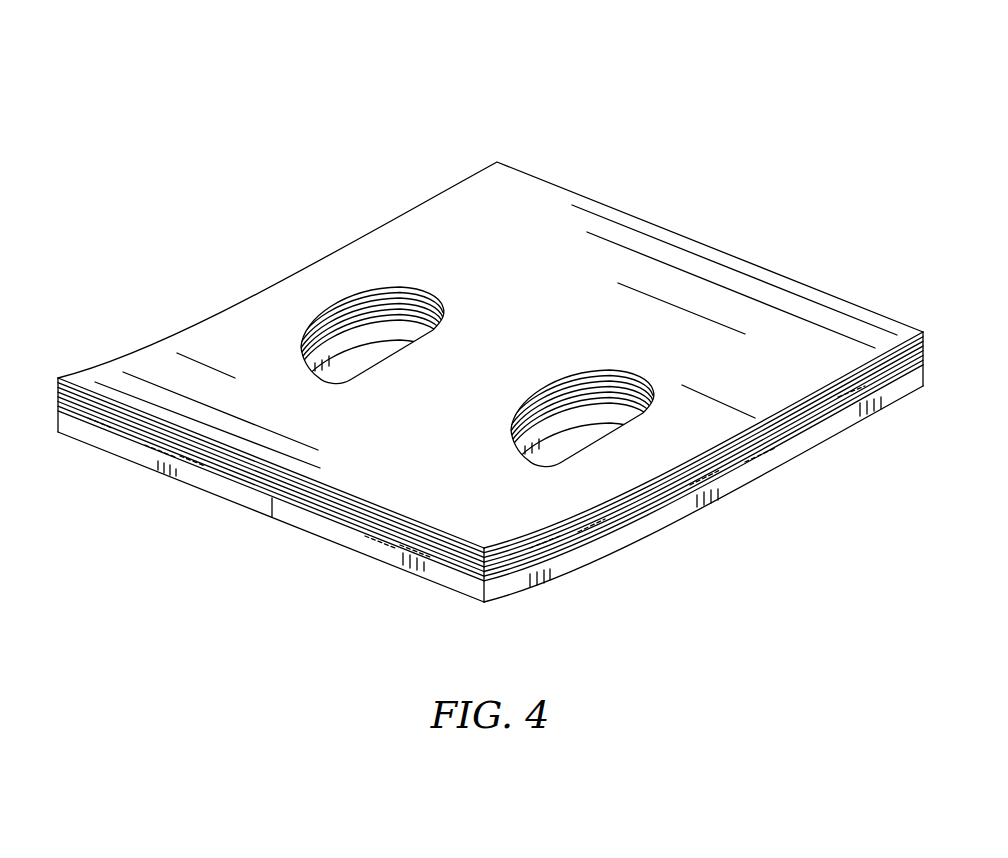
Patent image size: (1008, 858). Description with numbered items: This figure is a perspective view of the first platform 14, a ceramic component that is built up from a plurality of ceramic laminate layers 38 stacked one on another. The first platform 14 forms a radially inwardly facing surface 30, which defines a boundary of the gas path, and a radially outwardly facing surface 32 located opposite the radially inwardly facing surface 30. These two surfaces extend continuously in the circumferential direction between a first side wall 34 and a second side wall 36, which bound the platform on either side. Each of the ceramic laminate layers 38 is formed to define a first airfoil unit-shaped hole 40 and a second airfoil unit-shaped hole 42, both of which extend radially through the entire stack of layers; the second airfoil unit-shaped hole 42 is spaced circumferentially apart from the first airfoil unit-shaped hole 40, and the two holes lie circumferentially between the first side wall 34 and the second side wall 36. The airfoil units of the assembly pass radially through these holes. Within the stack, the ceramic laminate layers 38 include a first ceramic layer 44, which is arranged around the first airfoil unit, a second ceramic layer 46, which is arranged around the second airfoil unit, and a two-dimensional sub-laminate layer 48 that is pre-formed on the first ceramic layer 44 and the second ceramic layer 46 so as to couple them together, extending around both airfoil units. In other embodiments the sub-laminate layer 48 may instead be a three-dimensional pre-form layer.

The first platform 14 is at (135, 113).
The radially inwardly facing surface 30 is at (550, 583).
The radially outwardly facing surface 32 is at (657, 458).
The first side wall 34 is at (736, 529).
The second side wall 36 is at (232, 276).
The ceramic laminate layers 38 is at (73, 466).
The first airfoil unit-shaped hole 40 is at (569, 438).
The second airfoil unit-shaped hole 42 is at (353, 356).
The first ceramic layer 44 is at (310, 541).
The second ceramic layer 46 is at (199, 491).
The 2D sub-laminate layer 48 is at (151, 451).